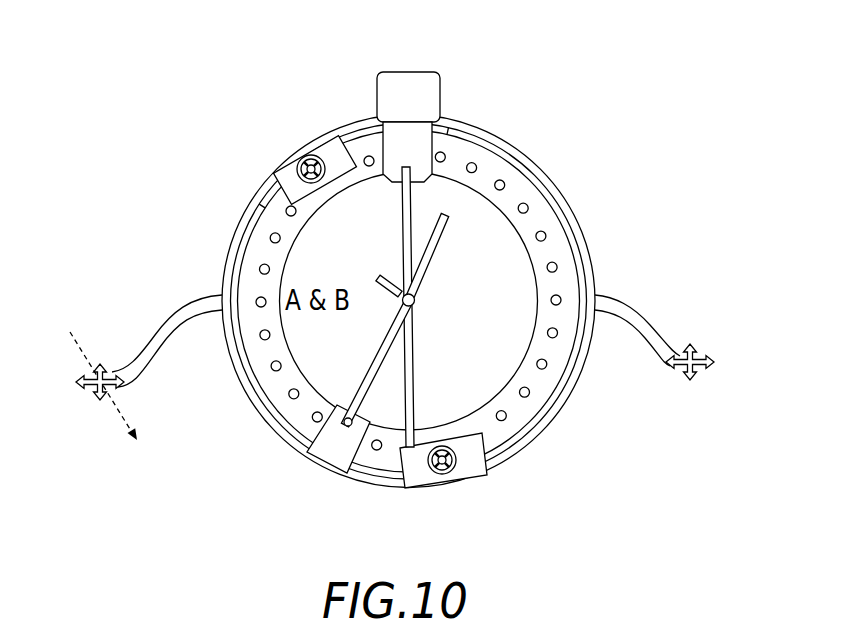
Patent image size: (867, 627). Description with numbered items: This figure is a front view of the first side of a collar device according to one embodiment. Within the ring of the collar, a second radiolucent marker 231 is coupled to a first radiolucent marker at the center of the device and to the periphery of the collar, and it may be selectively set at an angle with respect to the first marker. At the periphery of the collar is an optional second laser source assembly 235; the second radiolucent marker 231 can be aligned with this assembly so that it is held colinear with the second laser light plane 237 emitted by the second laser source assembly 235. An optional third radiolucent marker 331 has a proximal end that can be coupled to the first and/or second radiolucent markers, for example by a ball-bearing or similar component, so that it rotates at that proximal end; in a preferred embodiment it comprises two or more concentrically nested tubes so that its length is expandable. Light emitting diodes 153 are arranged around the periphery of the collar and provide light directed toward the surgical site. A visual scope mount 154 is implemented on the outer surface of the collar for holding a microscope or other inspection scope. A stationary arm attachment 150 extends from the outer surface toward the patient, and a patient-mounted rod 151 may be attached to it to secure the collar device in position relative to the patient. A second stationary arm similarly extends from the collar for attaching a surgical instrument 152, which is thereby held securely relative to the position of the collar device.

The stationary arm attachment 150 is at (160, 313).
The patient-mounted rod 151 is at (110, 427).
The surgical instrument 152 is at (672, 325).
The light emitting diodes 153 is at (547, 363).
The visual scope mount 154 is at (405, 85).
The second radiolucent marker 231 is at (430, 268).
The second laser source assembly 235 is at (333, 452).
The second laser light plane 237 is at (380, 463).
The third radiolucent marker 331 is at (375, 278).